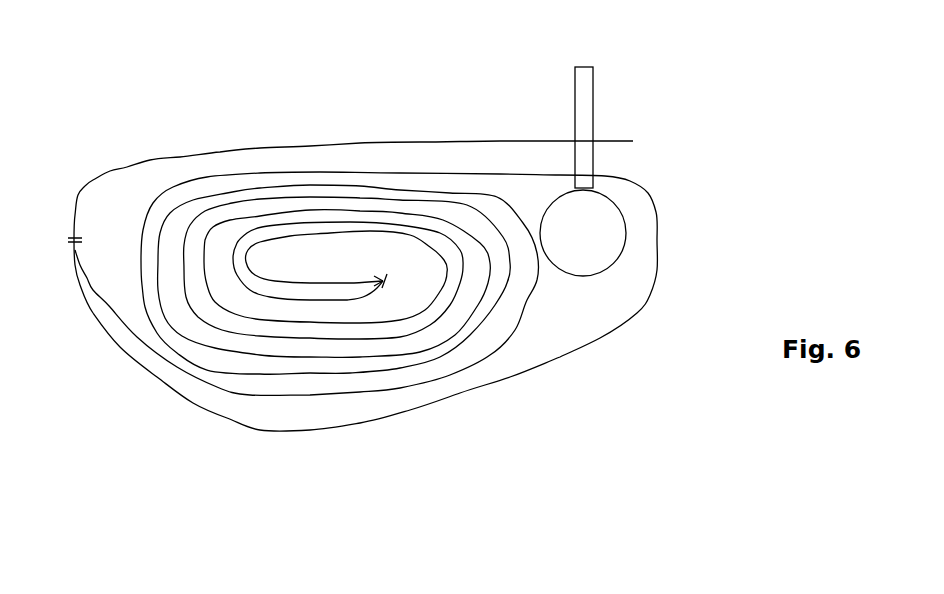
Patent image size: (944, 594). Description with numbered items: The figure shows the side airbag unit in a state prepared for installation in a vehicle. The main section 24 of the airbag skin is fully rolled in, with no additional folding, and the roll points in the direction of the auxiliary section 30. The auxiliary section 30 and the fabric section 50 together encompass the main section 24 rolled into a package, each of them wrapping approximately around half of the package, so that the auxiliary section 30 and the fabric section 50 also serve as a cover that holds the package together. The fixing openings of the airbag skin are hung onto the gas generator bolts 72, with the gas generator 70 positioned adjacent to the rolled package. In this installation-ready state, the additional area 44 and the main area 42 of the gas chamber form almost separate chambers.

The main section 24 is at (333, 218).
The main area 42 is at (393, 227).
The auxiliary section 30 is at (259, 397).
The additional area 44 is at (348, 412).
The fabric section 50 is at (489, 143).
The gas generator bolt 72 is at (587, 112).
The feed pad 70 is at (583, 255).